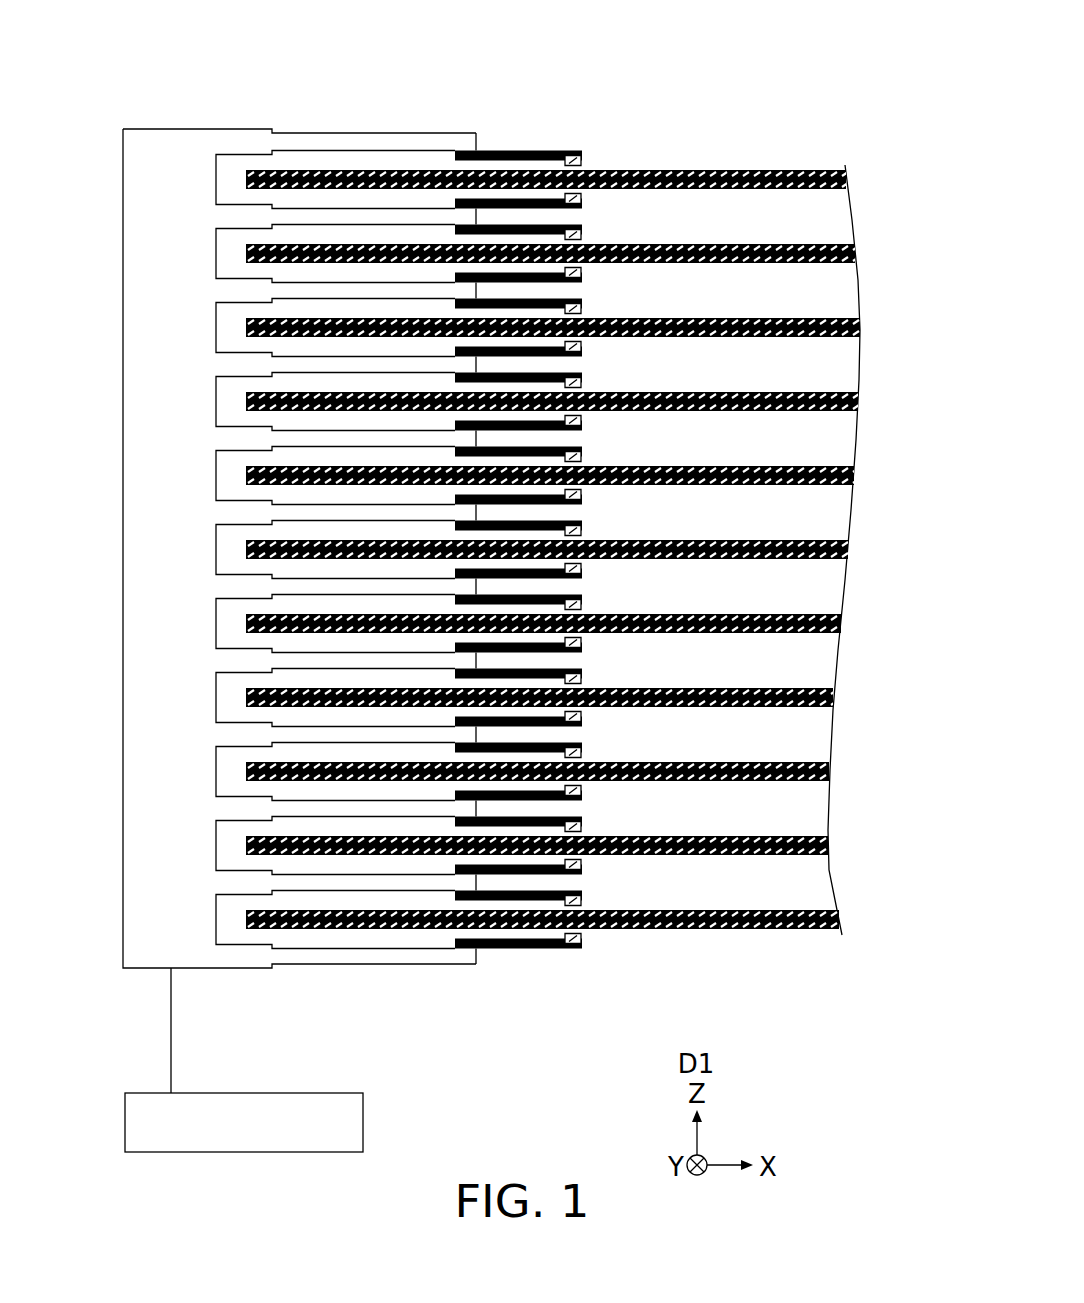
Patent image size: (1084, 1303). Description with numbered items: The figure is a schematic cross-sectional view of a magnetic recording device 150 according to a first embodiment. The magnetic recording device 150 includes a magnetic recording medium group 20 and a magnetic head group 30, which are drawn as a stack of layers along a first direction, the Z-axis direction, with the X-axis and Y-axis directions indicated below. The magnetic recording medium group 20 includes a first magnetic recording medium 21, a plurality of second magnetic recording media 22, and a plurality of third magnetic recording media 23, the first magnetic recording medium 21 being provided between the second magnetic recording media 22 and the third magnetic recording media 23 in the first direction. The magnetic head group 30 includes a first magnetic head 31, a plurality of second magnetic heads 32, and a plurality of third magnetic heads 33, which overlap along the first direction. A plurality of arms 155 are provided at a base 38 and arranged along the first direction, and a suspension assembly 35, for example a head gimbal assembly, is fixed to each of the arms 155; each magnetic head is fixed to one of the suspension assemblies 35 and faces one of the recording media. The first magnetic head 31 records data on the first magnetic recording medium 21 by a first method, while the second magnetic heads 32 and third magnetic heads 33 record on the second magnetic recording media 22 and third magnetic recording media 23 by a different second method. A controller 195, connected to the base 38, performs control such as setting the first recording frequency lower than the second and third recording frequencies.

The magnetic recording device 150 is at (872, 110).
The arms 155 is at (242, 219).
The base 38 is at (169, 198).
The magnetic recording medium group 20 is at (762, 148).
The second magnetic recording media 22 is at (826, 170).
The first magnetic recording medium 21 is at (826, 540).
The third magnetic recording media 23 is at (826, 614).
The magnetic head group 30 is at (571, 138).
The suspension assembly 35 is at (519, 200).
The second magnetic heads 32 is at (582, 160).
The first magnetic head 31 is at (582, 529).
The third magnetic heads 33 is at (582, 604).
The controller 195 is at (365, 1120).